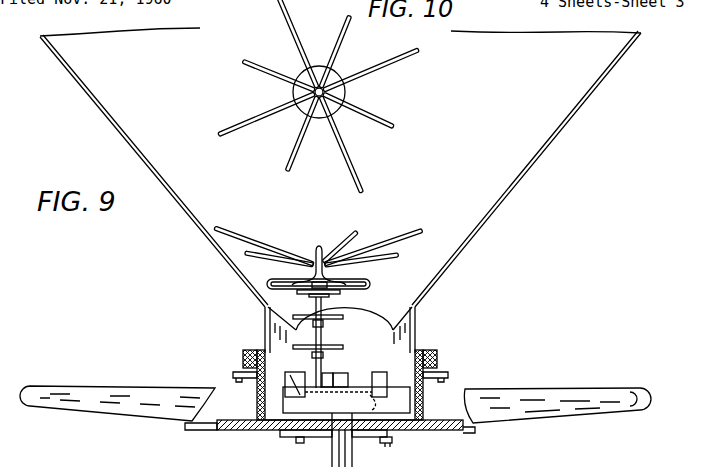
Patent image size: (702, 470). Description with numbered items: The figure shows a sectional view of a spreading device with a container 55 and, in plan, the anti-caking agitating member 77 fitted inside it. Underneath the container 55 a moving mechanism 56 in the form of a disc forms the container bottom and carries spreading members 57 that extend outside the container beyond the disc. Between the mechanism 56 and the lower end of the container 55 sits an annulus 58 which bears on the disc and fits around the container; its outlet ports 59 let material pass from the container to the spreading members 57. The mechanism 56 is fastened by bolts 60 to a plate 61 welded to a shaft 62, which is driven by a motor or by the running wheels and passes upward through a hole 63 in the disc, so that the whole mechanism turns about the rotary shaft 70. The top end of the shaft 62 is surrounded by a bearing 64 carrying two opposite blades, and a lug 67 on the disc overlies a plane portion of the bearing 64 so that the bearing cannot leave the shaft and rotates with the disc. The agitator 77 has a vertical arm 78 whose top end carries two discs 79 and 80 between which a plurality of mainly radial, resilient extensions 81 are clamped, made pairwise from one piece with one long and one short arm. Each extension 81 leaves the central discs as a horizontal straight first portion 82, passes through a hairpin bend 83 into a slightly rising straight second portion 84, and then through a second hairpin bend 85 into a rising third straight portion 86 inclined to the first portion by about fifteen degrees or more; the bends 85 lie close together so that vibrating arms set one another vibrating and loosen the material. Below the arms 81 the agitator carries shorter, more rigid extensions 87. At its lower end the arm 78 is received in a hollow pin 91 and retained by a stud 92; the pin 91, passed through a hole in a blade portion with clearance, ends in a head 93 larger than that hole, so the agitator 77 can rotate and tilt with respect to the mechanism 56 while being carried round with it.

In FIG. 9, the container 55 is at (501, 227).
In FIG. 9, the moving mechanism 56 is at (221, 431).
In FIG. 9, the spreading members 57 is at (88, 395).
In FIG. 9, the annulus 58 is at (262, 397).
In FIG. 9, the outlet ports 59 is at (265, 385).
In FIG. 9, the bolts 60 is at (296, 439).
In FIG. 9, the plate 61 is at (389, 446).
In FIG. 9, the shaft 62 is at (365, 432).
In FIG. 9, the hole 63 is at (322, 431).
In FIG. 9, the bearing 64 is at (335, 385).
In FIG. 9, the lug 67 is at (345, 383).
In FIG. 9, the rotary shaft 70 is at (342, 448).
In FIG. 9, the agitating member 77 is at (362, 234).
In FIG. 9, the arm 78 is at (315, 325).
In FIG. 10, the disc 79 is at (334, 80).
In FIG. 9, the disc 79 is at (283, 279).
In FIG. 9, the disc 80 is at (302, 294).
In FIG. 10, the extensions 81 is at (401, 61).
In FIG. 9, the extensions 81 is at (274, 236).
In FIG. 9, the straight first portion 82 is at (352, 292).
In FIG. 9, the hairpin bend 83 is at (375, 287).
In FIG. 9, the straight second portion 84 is at (368, 280).
In FIG. 10, the second hairpin bend 85 is at (305, 94).
In FIG. 9, the second hairpin bend 85 is at (315, 252).
In FIG. 10, the third straight portion 86 is at (259, 52).
In FIG. 9, the third straight portion 86 is at (398, 258).
In FIG. 9, the extensions 87 is at (326, 322).
In FIG. 9, the hollow pin 91 is at (313, 375).
In FIG. 9, the stud 92 is at (329, 380).
In FIG. 9, the head 93 is at (333, 440).